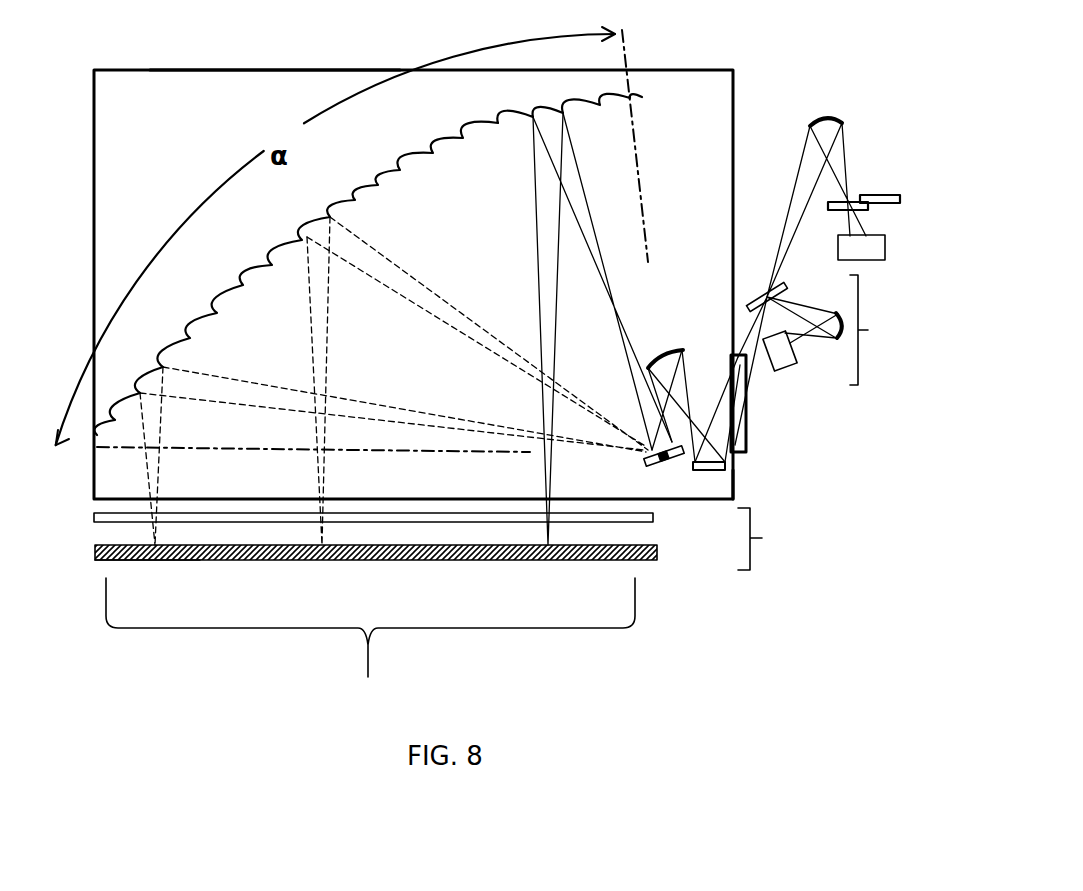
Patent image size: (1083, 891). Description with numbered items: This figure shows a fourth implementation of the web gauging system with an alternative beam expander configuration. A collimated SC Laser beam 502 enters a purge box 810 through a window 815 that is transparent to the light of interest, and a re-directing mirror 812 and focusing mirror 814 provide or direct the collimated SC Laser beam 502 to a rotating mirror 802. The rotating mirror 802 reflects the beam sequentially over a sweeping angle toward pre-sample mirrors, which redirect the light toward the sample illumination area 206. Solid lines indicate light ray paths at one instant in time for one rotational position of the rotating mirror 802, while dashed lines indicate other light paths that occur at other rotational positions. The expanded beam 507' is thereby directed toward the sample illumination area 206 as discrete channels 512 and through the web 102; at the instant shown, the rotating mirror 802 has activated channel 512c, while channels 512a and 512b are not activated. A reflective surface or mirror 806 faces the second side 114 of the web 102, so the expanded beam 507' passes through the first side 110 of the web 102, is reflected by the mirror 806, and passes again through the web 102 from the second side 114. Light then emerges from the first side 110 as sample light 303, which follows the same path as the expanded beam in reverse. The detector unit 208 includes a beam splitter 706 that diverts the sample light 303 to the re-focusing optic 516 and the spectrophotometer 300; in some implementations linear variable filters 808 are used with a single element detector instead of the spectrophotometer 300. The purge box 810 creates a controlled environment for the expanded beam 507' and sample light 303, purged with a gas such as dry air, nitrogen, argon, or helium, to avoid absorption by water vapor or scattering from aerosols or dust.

The first side of the web 110 is at (91, 492).
The purge box 810 is at (260, 72).
The expanded beam 507' is at (566, 329).
The sample light 303 is at (537, 227).
The channel 512a is at (161, 580).
The channel 512b is at (331, 581).
The channel 512c is at (558, 581).
The discrete channels 512 is at (370, 654).
The web 102 is at (653, 516).
The second side of the web 114 is at (110, 527).
The reflective surface or mirror 806 is at (97, 553).
The sample illumination area 206 is at (784, 539).
The rotating mirror 802 is at (645, 463).
The focusing mirror 814 is at (655, 348).
The window 815 is at (747, 427).
The re-directing mirror 812 is at (745, 477).
The beam splitter 706 is at (770, 298).
The re-focusing optic 516 is at (838, 343).
The spectrophotometer 300 is at (780, 372).
The detector unit 208 is at (889, 330).
The collimated SC Laser beam 502 is at (803, 177).
The linear variable filters 808 is at (868, 196).